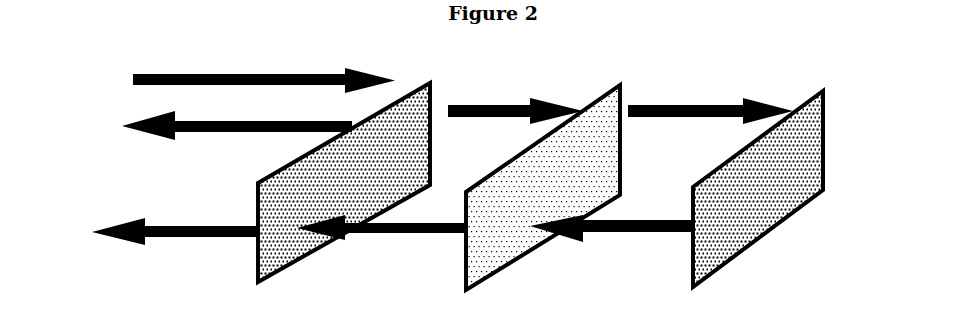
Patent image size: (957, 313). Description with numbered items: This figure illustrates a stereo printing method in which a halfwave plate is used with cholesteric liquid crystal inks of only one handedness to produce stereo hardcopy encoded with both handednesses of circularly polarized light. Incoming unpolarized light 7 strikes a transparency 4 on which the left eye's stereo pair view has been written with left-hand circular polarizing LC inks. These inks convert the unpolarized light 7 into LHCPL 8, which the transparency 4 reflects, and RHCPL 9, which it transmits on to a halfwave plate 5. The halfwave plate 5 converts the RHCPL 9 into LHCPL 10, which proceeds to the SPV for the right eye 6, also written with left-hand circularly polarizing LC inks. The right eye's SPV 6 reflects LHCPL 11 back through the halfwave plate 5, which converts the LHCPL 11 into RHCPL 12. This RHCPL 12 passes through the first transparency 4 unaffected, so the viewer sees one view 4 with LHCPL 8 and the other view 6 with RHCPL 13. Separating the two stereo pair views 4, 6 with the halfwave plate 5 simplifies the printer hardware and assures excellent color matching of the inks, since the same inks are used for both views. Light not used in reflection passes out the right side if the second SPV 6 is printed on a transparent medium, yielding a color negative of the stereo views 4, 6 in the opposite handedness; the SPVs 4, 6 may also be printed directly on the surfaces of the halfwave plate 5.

The transparency 4 is at (344, 182).
The halfwave plate 5 is at (543, 187).
The SPV for the right eye 6 is at (758, 189).
The incoming unpolarized light 7 is at (264, 72).
The LHCPL 8 is at (237, 119).
The RHCPL 9 is at (515, 102).
The LHCPL 10 is at (710, 102).
The LHCPL 11 is at (611, 220).
The RHCPL 12 is at (381, 219).
The RHCPL 13 is at (175, 223).